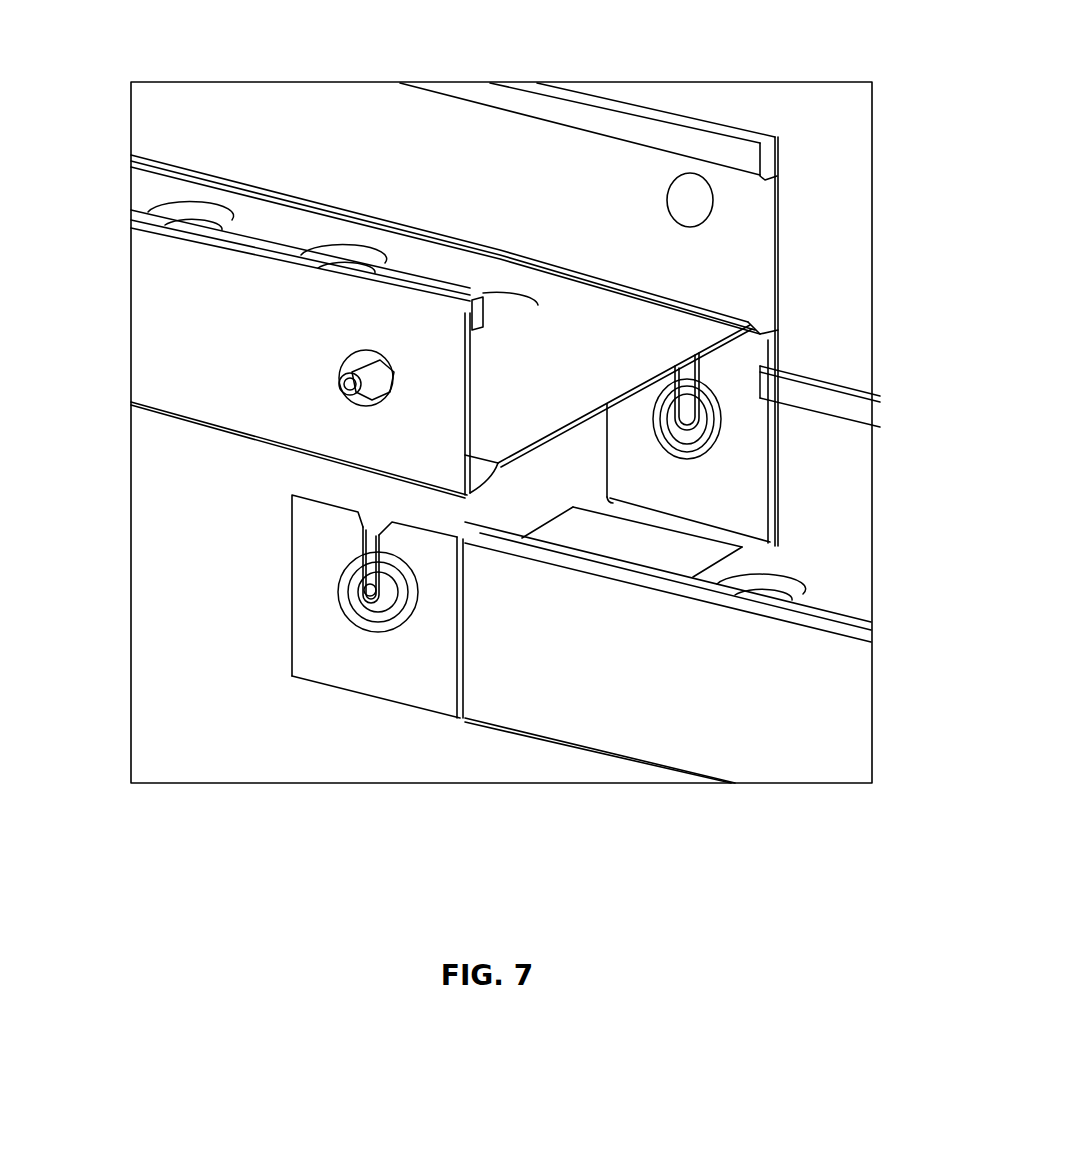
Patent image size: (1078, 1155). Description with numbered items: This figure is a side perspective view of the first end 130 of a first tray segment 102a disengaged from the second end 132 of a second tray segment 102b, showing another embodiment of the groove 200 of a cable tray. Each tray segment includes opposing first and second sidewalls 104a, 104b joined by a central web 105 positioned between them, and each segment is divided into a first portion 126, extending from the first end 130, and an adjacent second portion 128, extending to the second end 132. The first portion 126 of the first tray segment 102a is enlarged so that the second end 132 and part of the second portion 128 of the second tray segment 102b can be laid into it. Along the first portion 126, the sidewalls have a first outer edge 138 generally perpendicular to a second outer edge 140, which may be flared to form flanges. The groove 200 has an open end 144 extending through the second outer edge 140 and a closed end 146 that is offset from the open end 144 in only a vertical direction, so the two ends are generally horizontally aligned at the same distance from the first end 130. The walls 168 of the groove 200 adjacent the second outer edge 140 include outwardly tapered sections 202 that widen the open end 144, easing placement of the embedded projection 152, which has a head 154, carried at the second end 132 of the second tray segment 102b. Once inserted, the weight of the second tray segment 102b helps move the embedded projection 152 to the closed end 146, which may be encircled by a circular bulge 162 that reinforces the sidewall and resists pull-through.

The first tray segment 102a is at (693, 750).
The second tray segment 102b is at (155, 366).
The first sidewall 104a is at (155, 290).
The second sidewall 104b is at (750, 281).
The central web 105 is at (555, 375).
The first portion 126 is at (752, 360).
The second portion 128 is at (750, 229).
The first end 130 is at (289, 672).
The second end 132 is at (755, 130).
The first outer edge 138 is at (285, 630).
The second outer edge 140 is at (684, 420).
The open end 144 is at (377, 560).
The closed end 146 is at (690, 388).
The embedded projection 152 is at (342, 386).
The head 154 is at (687, 419).
The circular bulge 162 is at (367, 600).
The walls 168 is at (372, 567).
The groove 200 is at (758, 386).
The outwardly tapered sections 202 is at (368, 528).